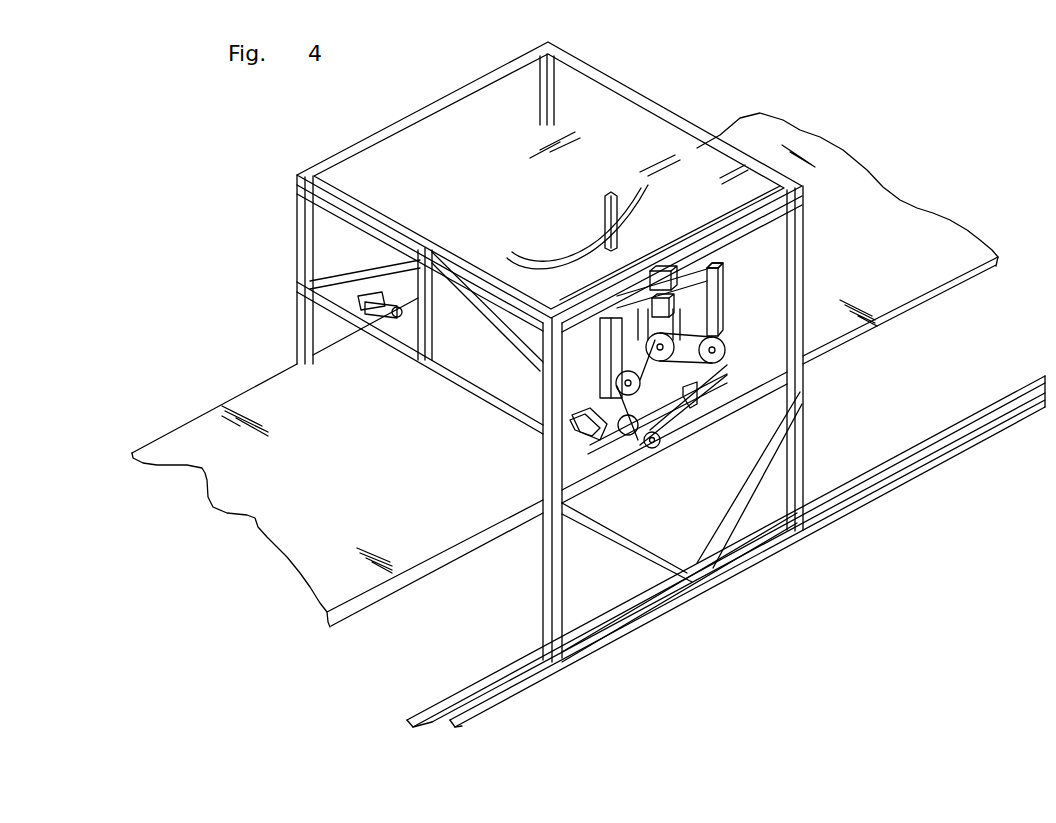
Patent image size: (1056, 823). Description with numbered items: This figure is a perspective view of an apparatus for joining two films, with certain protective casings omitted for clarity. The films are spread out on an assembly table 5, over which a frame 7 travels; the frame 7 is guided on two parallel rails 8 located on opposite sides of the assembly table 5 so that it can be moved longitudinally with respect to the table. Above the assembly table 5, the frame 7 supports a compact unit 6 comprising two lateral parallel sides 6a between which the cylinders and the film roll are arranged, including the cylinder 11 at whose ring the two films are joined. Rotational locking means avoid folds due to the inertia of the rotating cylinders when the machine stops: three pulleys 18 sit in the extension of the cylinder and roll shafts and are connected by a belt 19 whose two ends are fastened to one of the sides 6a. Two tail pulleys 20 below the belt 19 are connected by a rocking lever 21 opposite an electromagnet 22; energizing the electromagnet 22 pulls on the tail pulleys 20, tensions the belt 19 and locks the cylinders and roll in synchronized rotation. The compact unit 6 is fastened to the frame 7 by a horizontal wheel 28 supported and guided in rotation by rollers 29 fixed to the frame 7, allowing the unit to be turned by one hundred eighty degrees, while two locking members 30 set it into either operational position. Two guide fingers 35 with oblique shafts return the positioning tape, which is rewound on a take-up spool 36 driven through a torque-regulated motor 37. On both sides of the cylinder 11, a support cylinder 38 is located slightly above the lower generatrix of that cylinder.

The assembly table 5 is at (876, 187).
The compact unit 6 is at (652, 243).
The lateral parallel sides 6a is at (718, 303).
The frame 7 is at (570, 52).
The rails 8 is at (938, 450).
The cylinder 11 is at (530, 340).
The pulleys 18 is at (718, 348).
The belt 19 is at (666, 432).
The tail pulleys 20 is at (706, 356).
The rocking lever 21 is at (718, 320).
The electromagnet 22 is at (646, 280).
The horizontal wheel 28 is at (566, 248).
The rollers 29 is at (650, 234).
The locking members 30 is at (718, 269).
The guide fingers 35 is at (682, 400).
The take-up spool 36 is at (622, 447).
The torque-regulated motor 37 is at (645, 445).
The support cylinder 38 is at (390, 308).